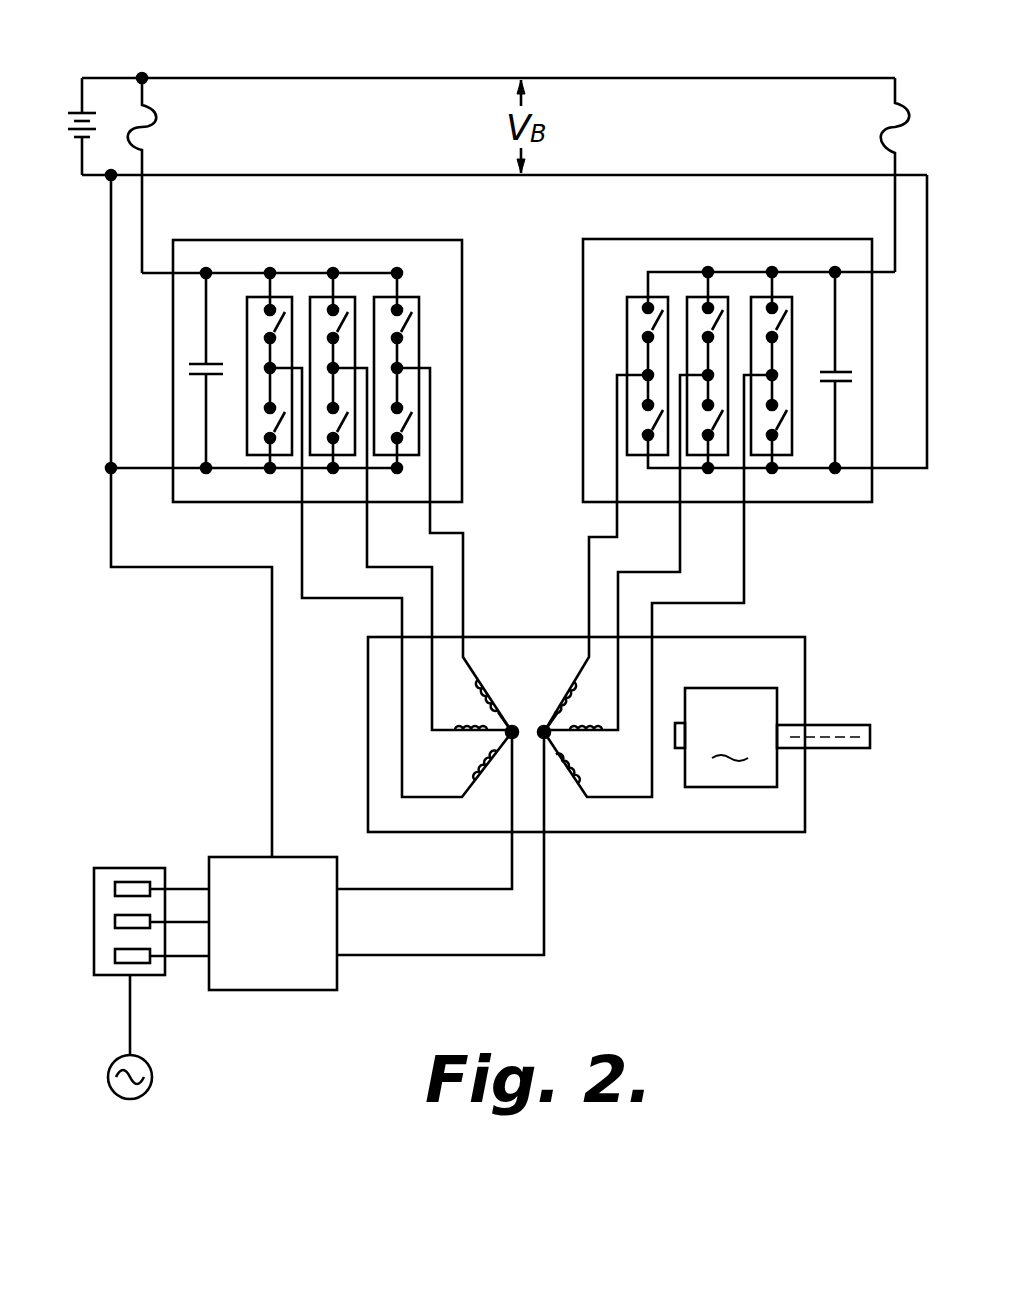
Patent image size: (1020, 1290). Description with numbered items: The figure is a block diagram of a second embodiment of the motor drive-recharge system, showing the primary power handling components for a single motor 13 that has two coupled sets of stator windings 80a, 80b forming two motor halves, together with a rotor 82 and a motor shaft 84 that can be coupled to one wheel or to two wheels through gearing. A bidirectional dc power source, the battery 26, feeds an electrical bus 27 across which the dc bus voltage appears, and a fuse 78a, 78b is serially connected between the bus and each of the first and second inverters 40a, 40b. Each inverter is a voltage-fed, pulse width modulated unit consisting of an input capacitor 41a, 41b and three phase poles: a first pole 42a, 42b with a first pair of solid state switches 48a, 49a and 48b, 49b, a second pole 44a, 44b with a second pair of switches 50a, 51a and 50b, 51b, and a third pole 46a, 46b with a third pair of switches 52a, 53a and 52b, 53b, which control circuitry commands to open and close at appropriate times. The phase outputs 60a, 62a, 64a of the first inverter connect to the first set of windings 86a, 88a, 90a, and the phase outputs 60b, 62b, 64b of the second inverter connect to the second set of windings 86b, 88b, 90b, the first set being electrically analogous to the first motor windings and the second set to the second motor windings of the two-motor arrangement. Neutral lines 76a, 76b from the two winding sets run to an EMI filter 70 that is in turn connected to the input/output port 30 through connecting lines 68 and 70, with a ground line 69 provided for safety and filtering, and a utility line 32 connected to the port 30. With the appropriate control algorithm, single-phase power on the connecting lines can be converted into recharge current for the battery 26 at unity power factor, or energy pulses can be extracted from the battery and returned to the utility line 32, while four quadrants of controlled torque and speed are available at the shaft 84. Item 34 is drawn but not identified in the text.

The motor 13 is at (666, 906).
The battery 26 is at (70, 110).
The electrical bus 27 is at (310, 78).
The input/output port 30 is at (140, 823).
The utility line 32 is at (133, 1027).
The AC power source 34 is at (132, 1100).
The first inverter 40a is at (352, 236).
The second inverter 40b is at (729, 236).
The input capacitor 41a is at (193, 377).
The input capacitor 41b is at (850, 375).
The first phase pole 42a is at (207, 377).
The first phase pole 42b is at (594, 331).
The second phase pole 44a is at (307, 377).
The second phase pole 44b is at (627, 348).
The third phase pole 46a is at (450, 340).
The third phase pole 46b is at (846, 340).
The solid state switch 48a is at (262, 325).
The solid state switch 48b is at (640, 325).
The solid state switch 49a is at (268, 423).
The solid state switch 49b is at (660, 418).
The solid state switch 50a is at (330, 330).
The solid state switch 50b is at (695, 325).
The solid state switch 51a is at (330, 420).
The solid state switch 51b is at (700, 432).
The solid state switch 52a is at (403, 330).
The solid state switch 52b is at (800, 330).
The solid state switch 53a is at (405, 428).
The solid state switch 53b is at (780, 425).
The phase line 60a is at (300, 566).
The phase line 60b is at (588, 550).
The phase line 62a is at (367, 557).
The phase line 62b is at (680, 540).
The phase line 64a is at (452, 533).
The phase line 64b is at (745, 537).
The connecting line 68 is at (183, 882).
The ground line 69 is at (197, 925).
The connecting line 70 is at (307, 992).
The neutral line 76a is at (400, 889).
The neutral line 76b is at (425, 955).
The fuse 78a is at (150, 130).
The fuse 78b is at (882, 125).
The first set of stator windings 80a is at (482, 655).
The second set of stator windings 80b is at (559, 665).
The rotor 82 is at (726, 737).
The motor shaft 84 is at (828, 725).
The winding 86a is at (473, 678).
The winding 86b is at (573, 680).
The winding 88a is at (470, 722).
The winding 88b is at (590, 725).
The winding 90a is at (477, 783).
The winding 90b is at (577, 783).